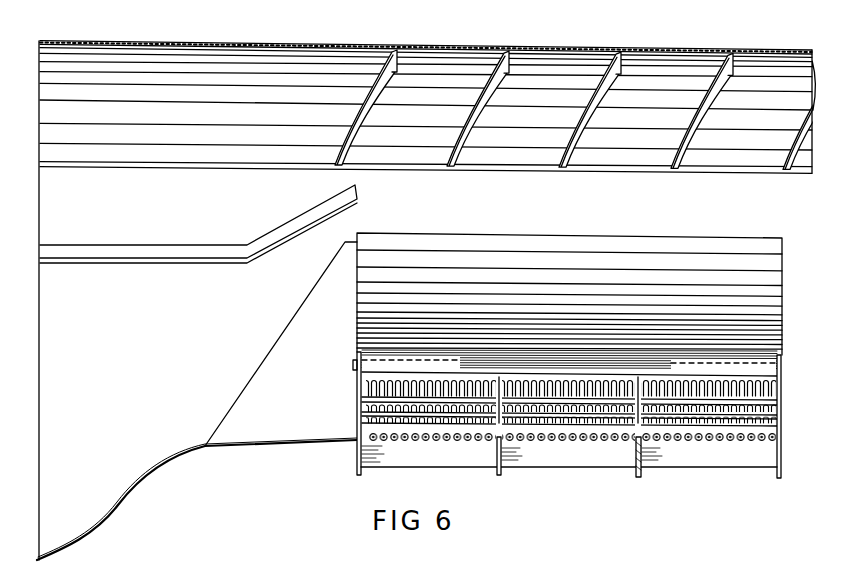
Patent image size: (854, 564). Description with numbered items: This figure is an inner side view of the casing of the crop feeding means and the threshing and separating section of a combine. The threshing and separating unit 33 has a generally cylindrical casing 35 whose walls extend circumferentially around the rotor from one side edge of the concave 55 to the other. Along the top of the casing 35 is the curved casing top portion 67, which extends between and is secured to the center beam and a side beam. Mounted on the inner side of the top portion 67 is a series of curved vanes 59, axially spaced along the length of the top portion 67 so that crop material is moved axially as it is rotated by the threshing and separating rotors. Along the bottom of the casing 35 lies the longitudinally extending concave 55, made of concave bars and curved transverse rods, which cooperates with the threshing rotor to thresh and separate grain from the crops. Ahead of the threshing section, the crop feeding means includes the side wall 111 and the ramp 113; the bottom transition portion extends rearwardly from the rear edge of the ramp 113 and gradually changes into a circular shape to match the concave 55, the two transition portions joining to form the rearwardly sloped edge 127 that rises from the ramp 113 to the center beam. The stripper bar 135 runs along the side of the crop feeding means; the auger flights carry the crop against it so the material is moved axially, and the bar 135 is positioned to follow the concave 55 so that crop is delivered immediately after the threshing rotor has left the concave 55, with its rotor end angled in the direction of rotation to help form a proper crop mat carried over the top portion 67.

The curved casing top portion 67 is at (248, 43).
The curved vane 59 is at (394, 50).
The casing 35 is at (447, 94).
The stripper bar 135 is at (147, 246).
The rearwardly sloped edge 127 is at (254, 373).
The side wall 111 is at (91, 479).
The ramp 113 is at (105, 527).
The concave 55 is at (777, 400).
The threshing and separating unit 33 is at (664, 474).